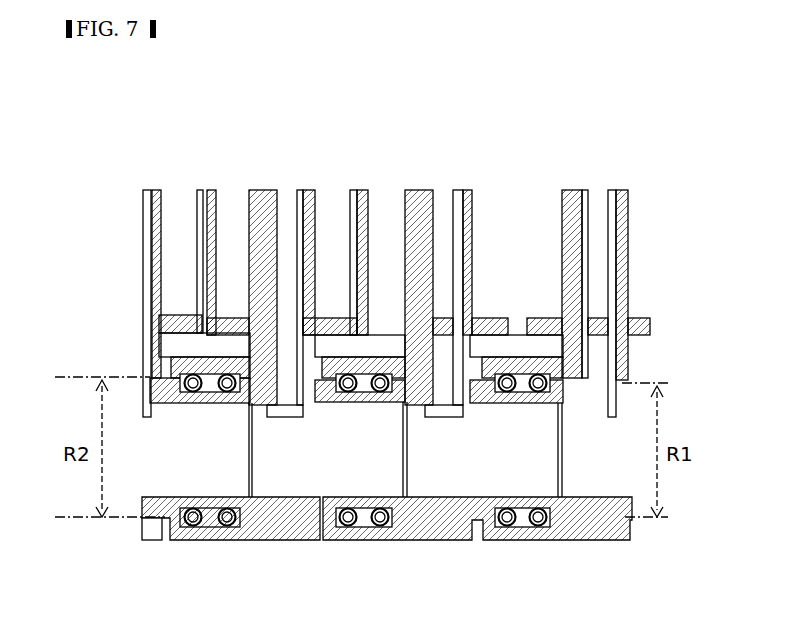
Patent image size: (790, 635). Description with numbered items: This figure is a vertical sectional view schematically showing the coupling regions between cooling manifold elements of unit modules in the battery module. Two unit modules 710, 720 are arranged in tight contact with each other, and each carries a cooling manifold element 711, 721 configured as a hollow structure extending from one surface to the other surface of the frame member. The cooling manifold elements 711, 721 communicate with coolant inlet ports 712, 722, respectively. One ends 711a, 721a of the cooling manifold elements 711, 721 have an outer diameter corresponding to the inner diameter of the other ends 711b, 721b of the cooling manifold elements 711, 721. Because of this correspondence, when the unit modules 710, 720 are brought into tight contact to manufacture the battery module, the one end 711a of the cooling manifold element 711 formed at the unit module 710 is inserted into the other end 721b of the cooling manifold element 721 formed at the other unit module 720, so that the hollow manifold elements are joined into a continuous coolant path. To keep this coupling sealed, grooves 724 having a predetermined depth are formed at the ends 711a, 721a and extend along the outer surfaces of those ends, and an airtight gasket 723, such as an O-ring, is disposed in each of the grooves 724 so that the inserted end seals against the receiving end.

The unit module 710 is at (326, 172).
The cooling manifold element 711 is at (290, 540).
The one end of the cooling manifold element 711a is at (323, 393).
The other end of the cooling manifold element 711b is at (203, 370).
The coolant inlet port 712 is at (288, 205).
The unit module 720 is at (483, 172).
The cooling manifold element 721 is at (452, 540).
The one end of the cooling manifold element 721a is at (482, 393).
The other end of the cooling manifold element 721b is at (342, 360).
The coolant inlet port 722 is at (442, 205).
The airtight gasket 723 is at (505, 372).
The groove 724 is at (517, 373).